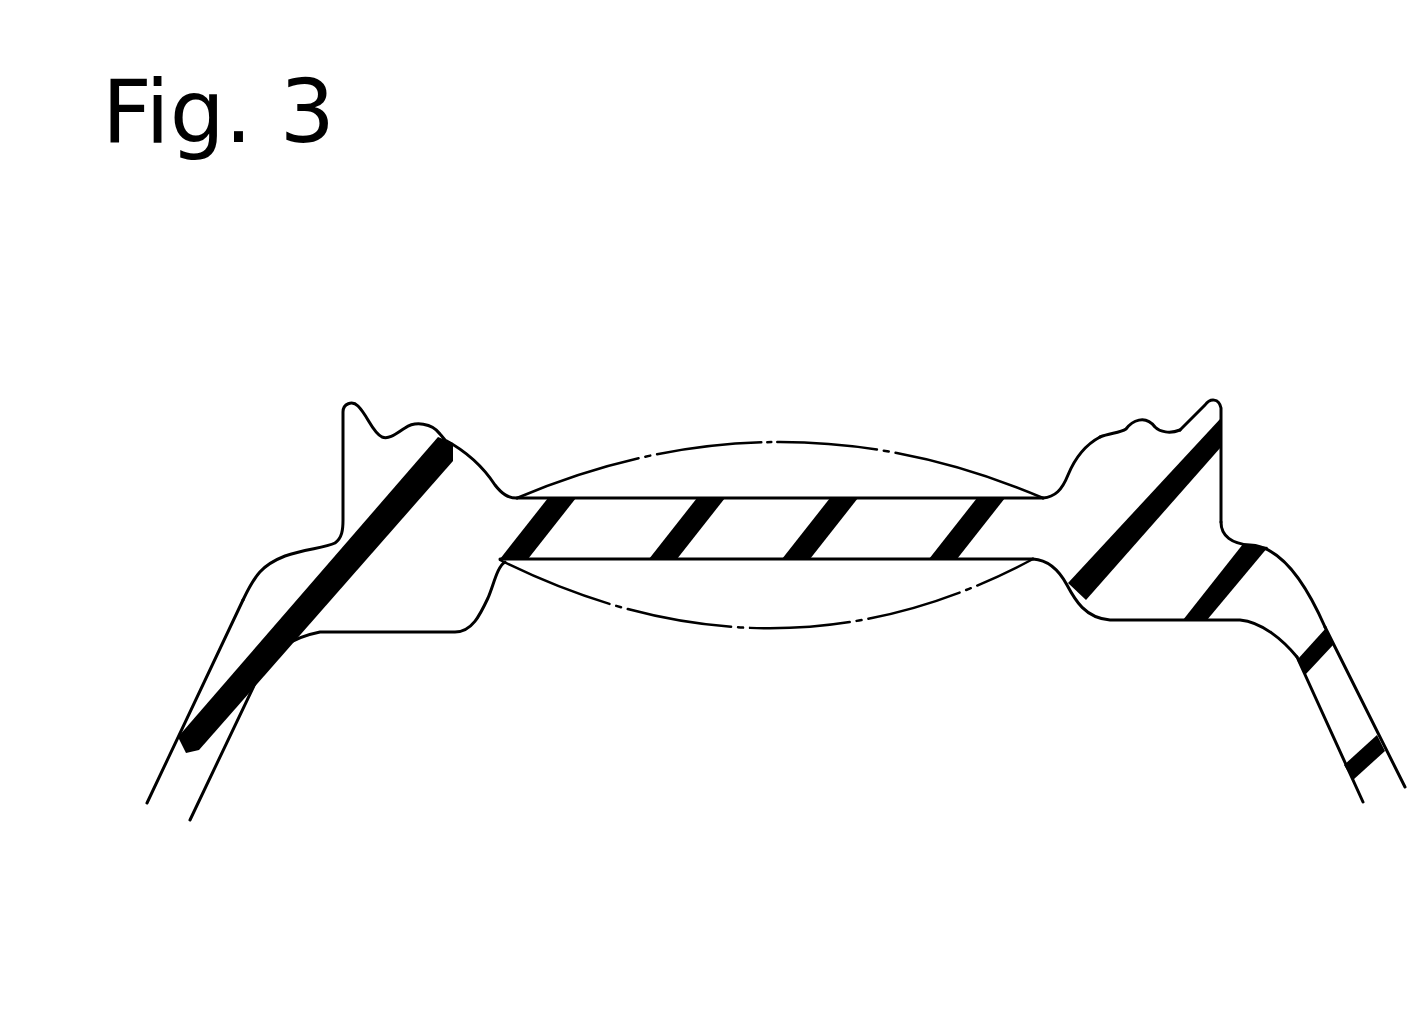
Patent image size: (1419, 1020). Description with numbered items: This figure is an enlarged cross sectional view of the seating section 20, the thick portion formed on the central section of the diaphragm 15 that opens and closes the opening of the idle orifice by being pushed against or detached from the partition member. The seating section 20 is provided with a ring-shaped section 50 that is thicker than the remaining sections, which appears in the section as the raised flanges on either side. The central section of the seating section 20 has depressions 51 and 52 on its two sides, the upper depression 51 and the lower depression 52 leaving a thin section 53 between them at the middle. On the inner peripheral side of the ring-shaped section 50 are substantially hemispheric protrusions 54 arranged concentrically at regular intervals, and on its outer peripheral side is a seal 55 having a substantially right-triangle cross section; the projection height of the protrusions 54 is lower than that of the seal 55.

The diaphragm 15 is at (184, 763).
The seating section 20 is at (603, 380).
The ring-shaped section 50 is at (410, 602).
The depression 51 is at (887, 477).
The depression 52 is at (923, 585).
The thin section 53 is at (763, 537).
The protrusions 54 is at (1140, 430).
The seal 55 is at (1207, 417).